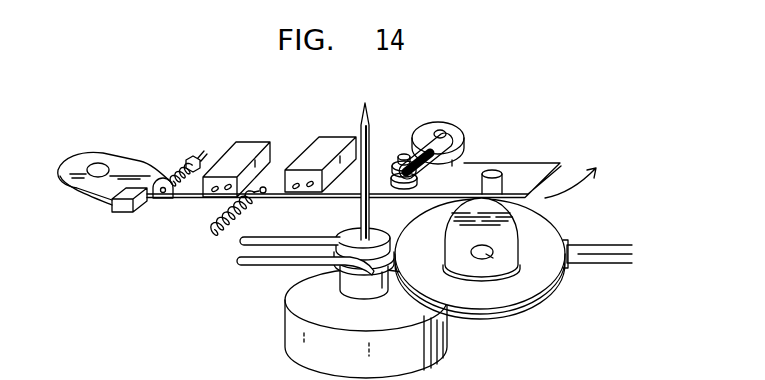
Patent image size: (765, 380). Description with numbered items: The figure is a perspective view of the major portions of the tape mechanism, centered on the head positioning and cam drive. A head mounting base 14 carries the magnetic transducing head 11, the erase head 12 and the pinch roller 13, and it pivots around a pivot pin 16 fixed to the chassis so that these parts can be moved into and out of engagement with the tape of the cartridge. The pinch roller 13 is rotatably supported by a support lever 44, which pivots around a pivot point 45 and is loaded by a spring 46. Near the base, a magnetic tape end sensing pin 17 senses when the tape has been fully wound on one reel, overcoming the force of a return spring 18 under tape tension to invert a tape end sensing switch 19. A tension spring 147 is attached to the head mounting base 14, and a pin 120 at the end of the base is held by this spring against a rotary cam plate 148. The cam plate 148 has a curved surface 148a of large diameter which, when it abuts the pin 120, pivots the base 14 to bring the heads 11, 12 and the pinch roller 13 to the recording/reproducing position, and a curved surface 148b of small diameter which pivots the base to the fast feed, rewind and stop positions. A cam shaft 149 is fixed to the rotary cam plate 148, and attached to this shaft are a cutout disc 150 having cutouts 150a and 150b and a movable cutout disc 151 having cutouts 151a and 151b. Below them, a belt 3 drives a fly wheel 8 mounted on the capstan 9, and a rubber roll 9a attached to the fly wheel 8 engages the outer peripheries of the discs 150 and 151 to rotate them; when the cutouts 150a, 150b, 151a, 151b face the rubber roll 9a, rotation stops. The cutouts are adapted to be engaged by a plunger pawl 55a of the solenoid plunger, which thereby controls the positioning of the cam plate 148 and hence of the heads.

The belt 3 is at (260, 267).
The fly wheel 8 is at (296, 336).
The capstan 9 is at (369, 112).
The rubber roll 9a is at (337, 263).
The magnetic transducing head 11 is at (322, 145).
The erase head 12 is at (232, 148).
The pinch roller 13 is at (455, 116).
The head mounting base 14 is at (278, 172).
The pivot pin 16 is at (92, 190).
The magnetic tape end sensing pin 17 is at (200, 154).
The return spring 18 is at (166, 178).
The tape end sensing switch 19 is at (122, 213).
The support lever 44 is at (422, 133).
The pivot point 45 is at (397, 188).
The spring 46 is at (410, 188).
The plunger pawl 55a is at (622, 246).
The pin 120 is at (492, 171).
The tension spring 147 is at (210, 229).
The rotary cam plate 148 is at (516, 243).
The curved surface of a large diameter 148a is at (500, 212).
The curved surface of a small diameter 148b is at (483, 280).
The cam shaft 149 is at (490, 252).
The cutout disc 150 is at (533, 272).
The cutout 150a is at (361, 287).
The cutout 150b is at (617, 275).
The movable cutout disc 151 is at (533, 267).
The cutout 151a is at (361, 287).
The cutout 151b is at (568, 268).